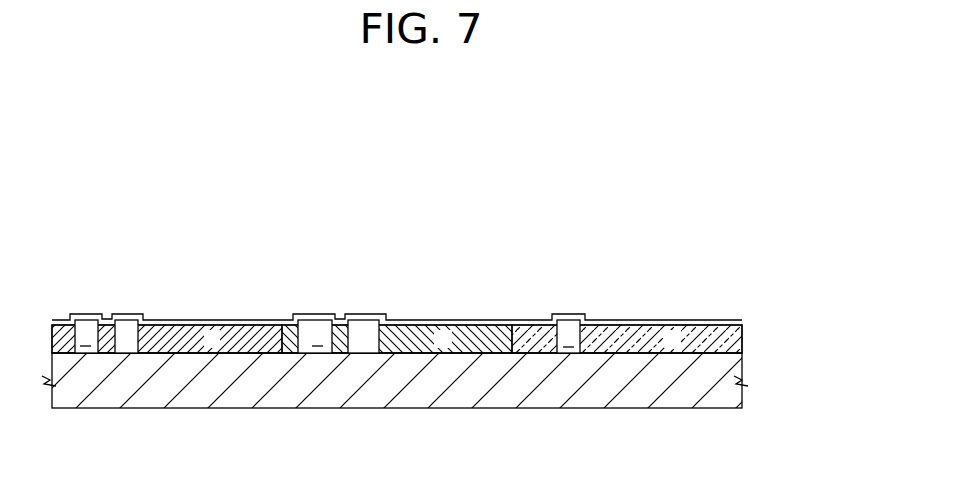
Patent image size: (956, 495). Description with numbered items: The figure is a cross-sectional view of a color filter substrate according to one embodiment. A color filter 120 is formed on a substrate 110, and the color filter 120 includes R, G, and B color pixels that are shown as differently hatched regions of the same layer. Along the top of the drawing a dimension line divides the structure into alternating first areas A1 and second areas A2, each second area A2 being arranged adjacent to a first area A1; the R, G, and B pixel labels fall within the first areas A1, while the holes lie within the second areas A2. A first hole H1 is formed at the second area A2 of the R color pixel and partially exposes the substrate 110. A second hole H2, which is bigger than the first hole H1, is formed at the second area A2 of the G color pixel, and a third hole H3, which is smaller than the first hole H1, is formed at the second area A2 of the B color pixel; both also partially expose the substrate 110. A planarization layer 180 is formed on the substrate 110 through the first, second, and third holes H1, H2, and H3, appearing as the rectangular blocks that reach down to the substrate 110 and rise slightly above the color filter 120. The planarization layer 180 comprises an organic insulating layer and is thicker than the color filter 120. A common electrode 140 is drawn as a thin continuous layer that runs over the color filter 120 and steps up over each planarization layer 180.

The substrate 110 is at (672, 395).
The color filter 120 is at (742, 347).
The common electrode 140 is at (742, 322).
The planarization layer 180 is at (127, 325).
The first hole H1 is at (86, 346).
The second hole H2 is at (318, 346).
The third hole H3 is at (568, 347).
The first area A1 is at (165, 191).
The second area A2 is at (743, 210).